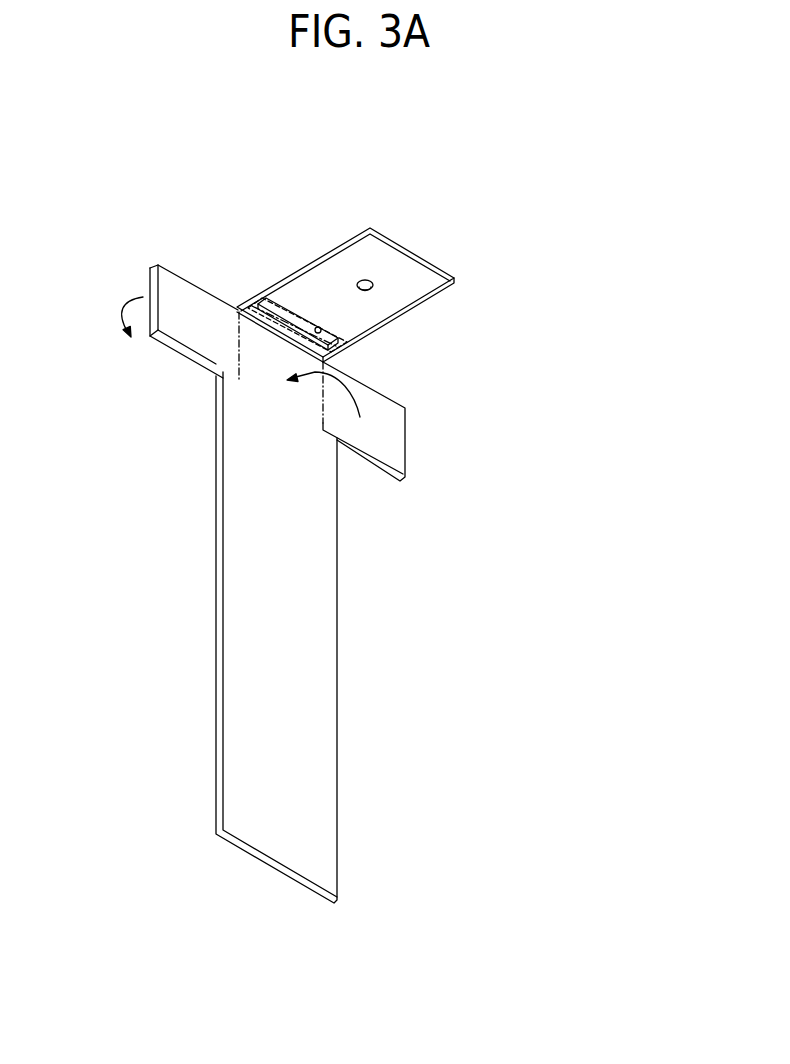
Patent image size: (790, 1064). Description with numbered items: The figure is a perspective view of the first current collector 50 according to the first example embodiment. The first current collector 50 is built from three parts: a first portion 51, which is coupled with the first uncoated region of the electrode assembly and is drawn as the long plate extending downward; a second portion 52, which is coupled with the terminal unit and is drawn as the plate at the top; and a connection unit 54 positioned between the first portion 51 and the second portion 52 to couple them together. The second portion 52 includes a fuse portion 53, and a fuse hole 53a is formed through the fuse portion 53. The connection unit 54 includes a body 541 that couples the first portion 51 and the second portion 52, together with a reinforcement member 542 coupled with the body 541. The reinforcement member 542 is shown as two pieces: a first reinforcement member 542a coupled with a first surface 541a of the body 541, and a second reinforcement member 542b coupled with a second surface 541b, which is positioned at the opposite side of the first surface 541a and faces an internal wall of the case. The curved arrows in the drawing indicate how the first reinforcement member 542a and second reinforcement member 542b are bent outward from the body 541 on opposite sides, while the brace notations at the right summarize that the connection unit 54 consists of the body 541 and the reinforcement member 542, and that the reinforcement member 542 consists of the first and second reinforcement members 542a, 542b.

The first current collector 50 is at (492, 355).
The first portion 51 is at (317, 605).
The second portion 52 is at (402, 272).
The fuse portion 53 is at (292, 303).
The fuse hole 53a is at (312, 327).
The connection unit 54 is at (630, 443).
The body 541 is at (140, 488).
The first surface 541a is at (262, 365).
The second surface 541b is at (238, 342).
The reinforcement member 542 is at (628, 530).
The first reinforcement member 542a is at (392, 435).
The second reinforcement member 542b is at (177, 293).